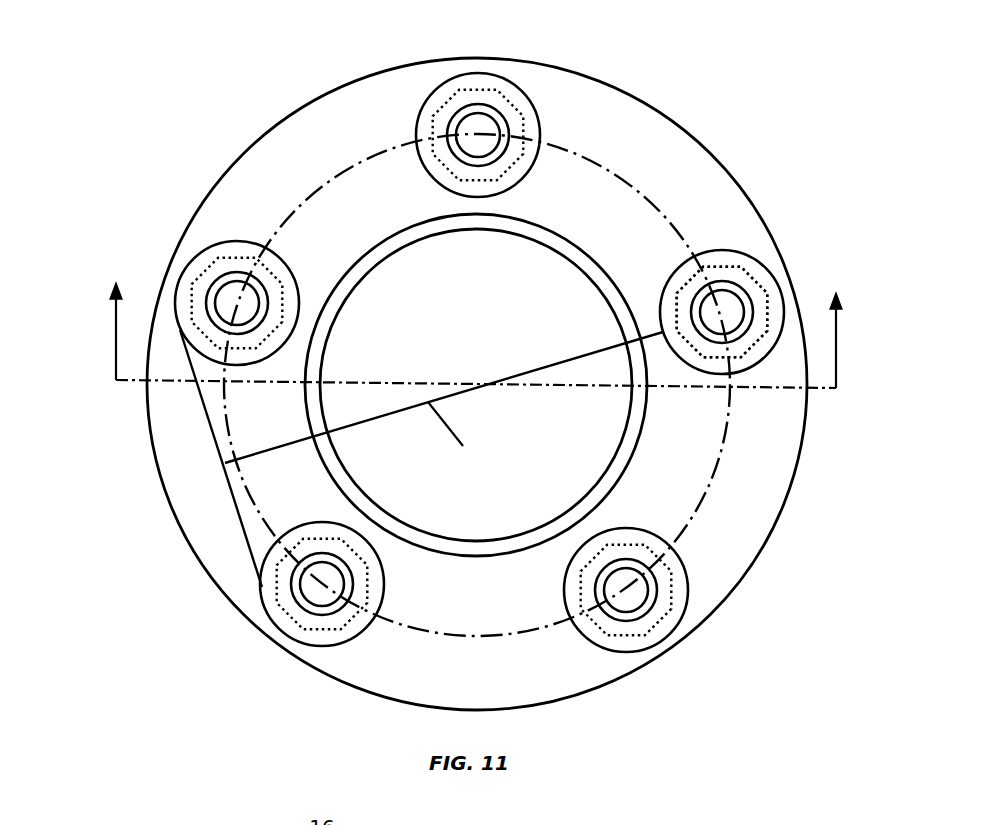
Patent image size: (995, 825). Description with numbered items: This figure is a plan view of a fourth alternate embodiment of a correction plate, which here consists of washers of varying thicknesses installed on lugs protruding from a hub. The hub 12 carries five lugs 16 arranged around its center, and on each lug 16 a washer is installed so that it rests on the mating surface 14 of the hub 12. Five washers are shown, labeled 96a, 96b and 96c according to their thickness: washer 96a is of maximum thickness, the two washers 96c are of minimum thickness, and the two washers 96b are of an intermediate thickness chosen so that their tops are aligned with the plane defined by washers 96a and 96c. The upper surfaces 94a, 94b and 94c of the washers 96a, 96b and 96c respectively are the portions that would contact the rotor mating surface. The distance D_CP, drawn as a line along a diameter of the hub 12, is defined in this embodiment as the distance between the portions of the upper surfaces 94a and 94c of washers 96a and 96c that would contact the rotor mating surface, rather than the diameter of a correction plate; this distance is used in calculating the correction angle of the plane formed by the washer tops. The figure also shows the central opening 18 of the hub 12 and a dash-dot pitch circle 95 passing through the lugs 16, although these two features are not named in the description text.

The hub 12 is at (677, 120).
The mating surface 14 is at (725, 564).
The lug 16 is at (763, 267).
The central bore 18 is at (380, 263).
The bolt pitch circle 95 is at (665, 213).
The upper surface 94a is at (777, 307).
The upper surface 94b is at (443, 88).
The upper surface 94c is at (210, 257).
The washer 96a is at (782, 337).
The washer 96b is at (425, 100).
The washer 96c is at (178, 283).